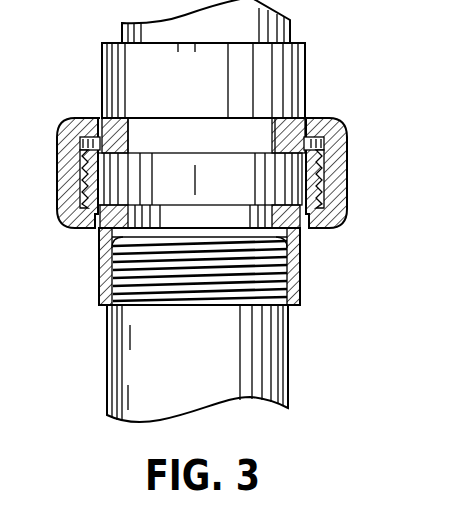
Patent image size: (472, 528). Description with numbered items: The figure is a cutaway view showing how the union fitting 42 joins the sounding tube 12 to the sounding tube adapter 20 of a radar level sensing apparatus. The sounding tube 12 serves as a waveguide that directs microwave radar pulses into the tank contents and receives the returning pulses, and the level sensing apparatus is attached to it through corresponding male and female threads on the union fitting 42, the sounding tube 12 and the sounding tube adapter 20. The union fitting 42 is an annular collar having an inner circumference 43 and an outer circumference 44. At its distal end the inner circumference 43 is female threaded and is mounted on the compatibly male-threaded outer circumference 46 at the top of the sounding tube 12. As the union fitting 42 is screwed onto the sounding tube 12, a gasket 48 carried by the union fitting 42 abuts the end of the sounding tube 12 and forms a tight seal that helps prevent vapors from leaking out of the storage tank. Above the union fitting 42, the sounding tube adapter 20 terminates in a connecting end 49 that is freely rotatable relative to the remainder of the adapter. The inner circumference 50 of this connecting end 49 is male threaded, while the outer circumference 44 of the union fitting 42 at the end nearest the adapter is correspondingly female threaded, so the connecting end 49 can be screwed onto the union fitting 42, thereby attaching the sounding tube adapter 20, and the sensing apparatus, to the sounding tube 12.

The sounding tube 12 is at (127, 372).
The sounding tube adapter 20 is at (88, 80).
The union fitting 42 is at (300, 256).
The inner circumference 43 is at (288, 288).
The outer circumference 44 is at (343, 160).
The outer circumference 46 is at (102, 289).
The gasket 48 is at (108, 237).
The connecting end 49 is at (345, 186).
The inner circumference 50 is at (60, 165).